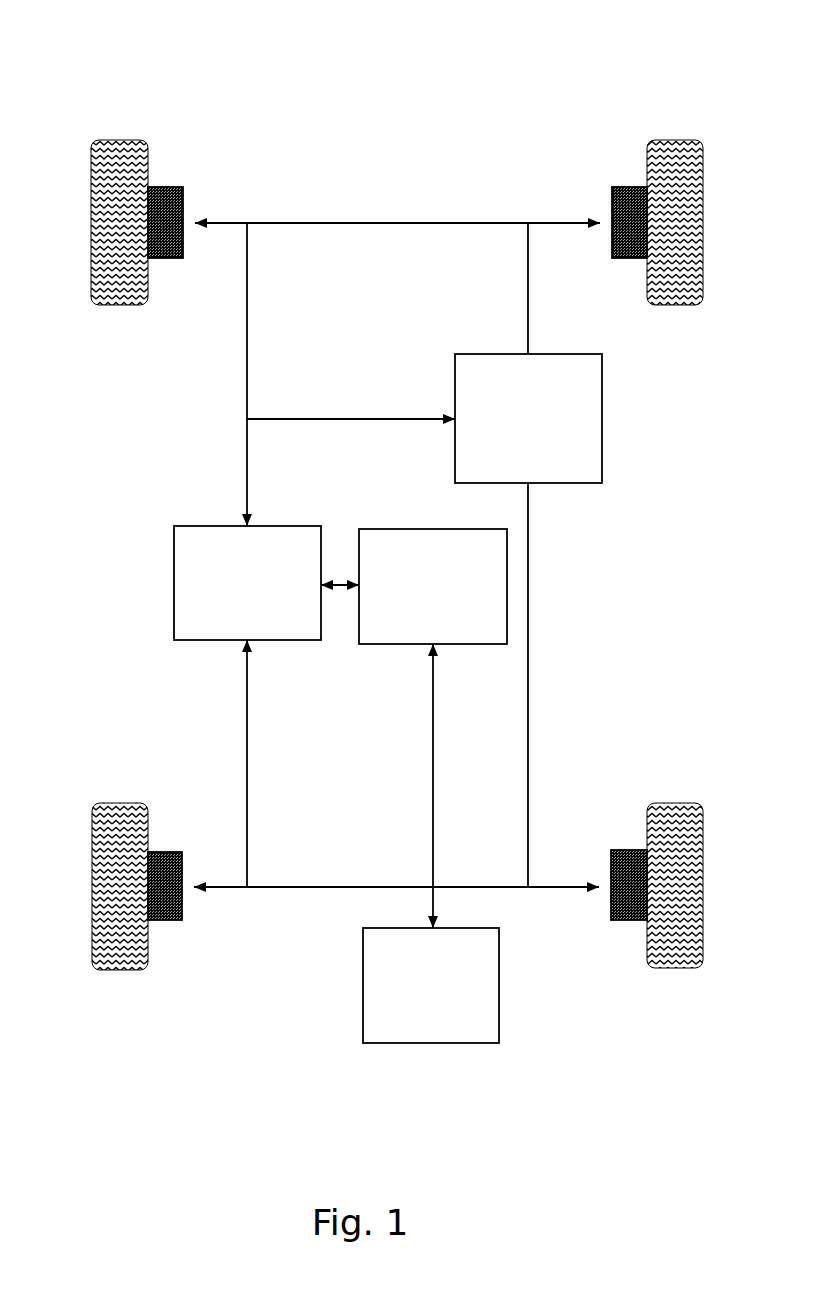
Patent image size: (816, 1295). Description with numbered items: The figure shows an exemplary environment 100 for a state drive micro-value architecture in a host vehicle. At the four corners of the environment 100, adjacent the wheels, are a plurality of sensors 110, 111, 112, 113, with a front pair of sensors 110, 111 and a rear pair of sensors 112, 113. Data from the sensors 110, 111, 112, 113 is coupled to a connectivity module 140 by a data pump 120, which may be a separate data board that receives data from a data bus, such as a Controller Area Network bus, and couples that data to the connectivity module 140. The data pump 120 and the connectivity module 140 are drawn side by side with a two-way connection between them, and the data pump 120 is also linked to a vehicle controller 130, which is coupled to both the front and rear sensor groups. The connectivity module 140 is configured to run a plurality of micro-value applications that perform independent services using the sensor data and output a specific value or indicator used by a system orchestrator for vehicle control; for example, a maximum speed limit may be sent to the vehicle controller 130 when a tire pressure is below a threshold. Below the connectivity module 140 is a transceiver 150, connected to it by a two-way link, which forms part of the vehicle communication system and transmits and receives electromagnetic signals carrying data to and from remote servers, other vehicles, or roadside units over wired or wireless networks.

The exemplary environment 100 is at (335, 36).
The sensor 110 is at (177, 186).
The sensor 111 is at (612, 170).
The sensor 112 is at (185, 922).
The sensor 113 is at (618, 820).
The data pump 120 is at (247, 583).
The vehicle controller 130 is at (528, 418).
The connectivity module 140 is at (433, 586).
The transceiver 150 is at (431, 985).